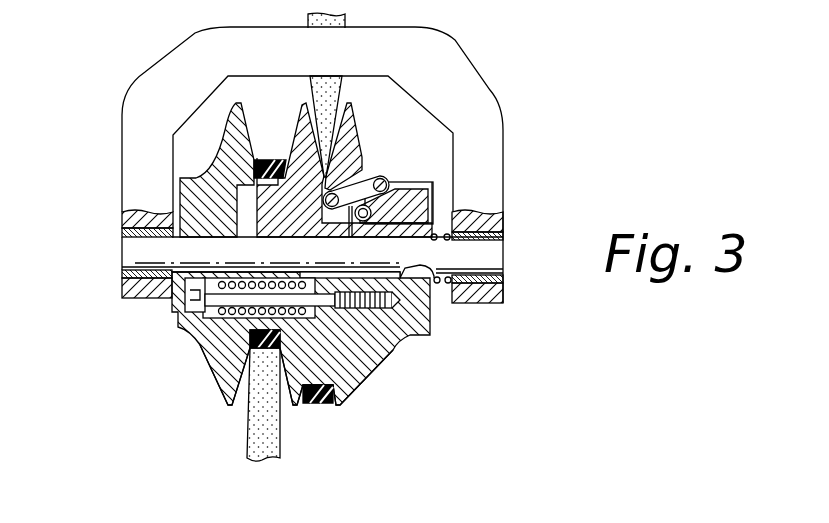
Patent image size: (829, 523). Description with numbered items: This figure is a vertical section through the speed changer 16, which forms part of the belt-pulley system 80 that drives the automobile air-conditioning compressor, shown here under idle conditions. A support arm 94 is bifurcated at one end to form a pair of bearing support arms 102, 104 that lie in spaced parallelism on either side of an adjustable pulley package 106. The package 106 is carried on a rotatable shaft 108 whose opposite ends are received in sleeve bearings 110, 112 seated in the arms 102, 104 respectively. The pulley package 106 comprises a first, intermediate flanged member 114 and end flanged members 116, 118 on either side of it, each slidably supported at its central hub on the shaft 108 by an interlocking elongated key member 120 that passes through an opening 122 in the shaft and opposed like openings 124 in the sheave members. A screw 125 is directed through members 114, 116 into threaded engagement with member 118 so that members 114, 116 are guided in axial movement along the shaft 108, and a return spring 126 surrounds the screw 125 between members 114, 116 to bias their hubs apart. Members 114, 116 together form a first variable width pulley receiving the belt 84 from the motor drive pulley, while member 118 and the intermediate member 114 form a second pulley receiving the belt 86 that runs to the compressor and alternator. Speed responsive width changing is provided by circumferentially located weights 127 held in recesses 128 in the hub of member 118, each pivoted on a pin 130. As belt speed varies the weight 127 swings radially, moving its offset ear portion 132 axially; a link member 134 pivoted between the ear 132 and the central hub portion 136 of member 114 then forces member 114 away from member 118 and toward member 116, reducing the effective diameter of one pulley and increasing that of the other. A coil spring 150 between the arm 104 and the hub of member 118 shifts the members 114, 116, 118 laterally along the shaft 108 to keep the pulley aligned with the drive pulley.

The support arm 94 is at (455, 58).
The speed changer 16 is at (118, 170).
The rotatable shaft 108 is at (128, 241).
The sleeve bearing 110 is at (122, 273).
The bearing support arm 102 is at (131, 292).
The opening 122 is at (184, 290).
The screw 125 is at (210, 330).
The return spring 126 is at (222, 350).
The belt 84 is at (257, 425).
The belt-pulley system 80 is at (281, 447).
The belt 86 is at (313, 403).
The central hub portion 136 is at (346, 362).
The adjustable pulley package 106 is at (420, 337).
The bearing support arm 104 is at (490, 298).
The interlocking elongated key member 120 is at (416, 280).
The sleeve bearing 112 is at (500, 279).
The opening 124 is at (408, 262).
The coil spring 150 is at (486, 222).
The weight 127 is at (432, 200).
The recess 128 is at (410, 186).
The offset ear portion 132 is at (395, 190).
The link member 134 is at (355, 180).
The pin 130 is at (366, 222).
The end flanged member 118 is at (347, 115).
The first flanged member 114 is at (300, 120).
The end flanged member 116 is at (232, 125).